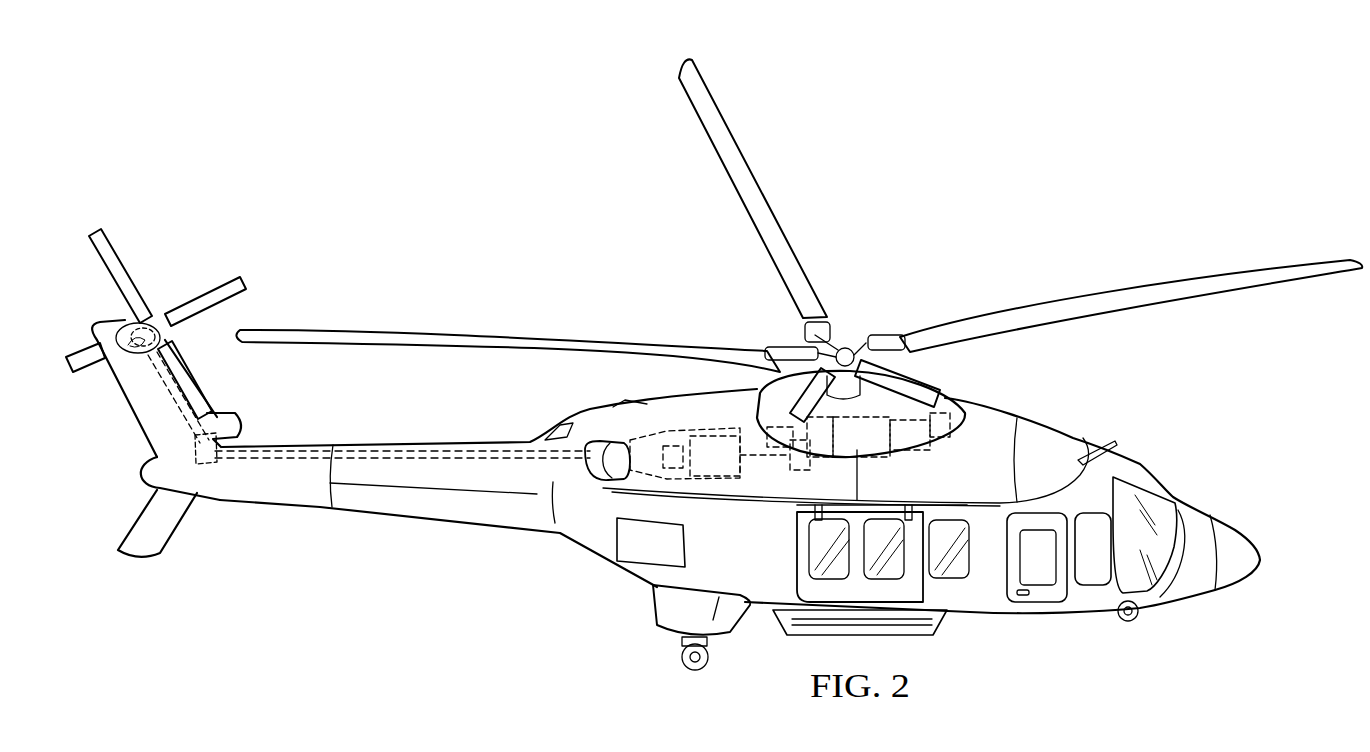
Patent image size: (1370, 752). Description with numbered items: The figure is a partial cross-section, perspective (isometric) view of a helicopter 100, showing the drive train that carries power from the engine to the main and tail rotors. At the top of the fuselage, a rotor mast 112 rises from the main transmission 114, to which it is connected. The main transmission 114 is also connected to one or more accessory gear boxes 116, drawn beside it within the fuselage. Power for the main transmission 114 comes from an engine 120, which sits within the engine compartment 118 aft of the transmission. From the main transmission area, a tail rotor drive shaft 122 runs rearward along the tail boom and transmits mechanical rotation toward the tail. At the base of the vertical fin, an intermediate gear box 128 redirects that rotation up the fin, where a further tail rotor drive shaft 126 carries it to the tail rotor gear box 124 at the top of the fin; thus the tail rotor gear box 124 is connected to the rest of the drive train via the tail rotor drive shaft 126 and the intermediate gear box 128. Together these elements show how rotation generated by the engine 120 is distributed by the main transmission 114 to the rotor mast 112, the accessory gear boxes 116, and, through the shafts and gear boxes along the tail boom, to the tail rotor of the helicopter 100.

The helicopter 100 is at (1055, 104).
The rotor mast 112 is at (850, 342).
The main transmission 114 is at (840, 457).
The accessory gear box 116 is at (925, 452).
The engine compartment 118 is at (716, 420).
The engine 120 is at (695, 470).
The tail rotor drive shaft 122 is at (414, 446).
The tail rotor gear box 124 is at (120, 322).
The tail rotor drive shaft 126 is at (194, 396).
The intermediate gear box 128 is at (207, 473).